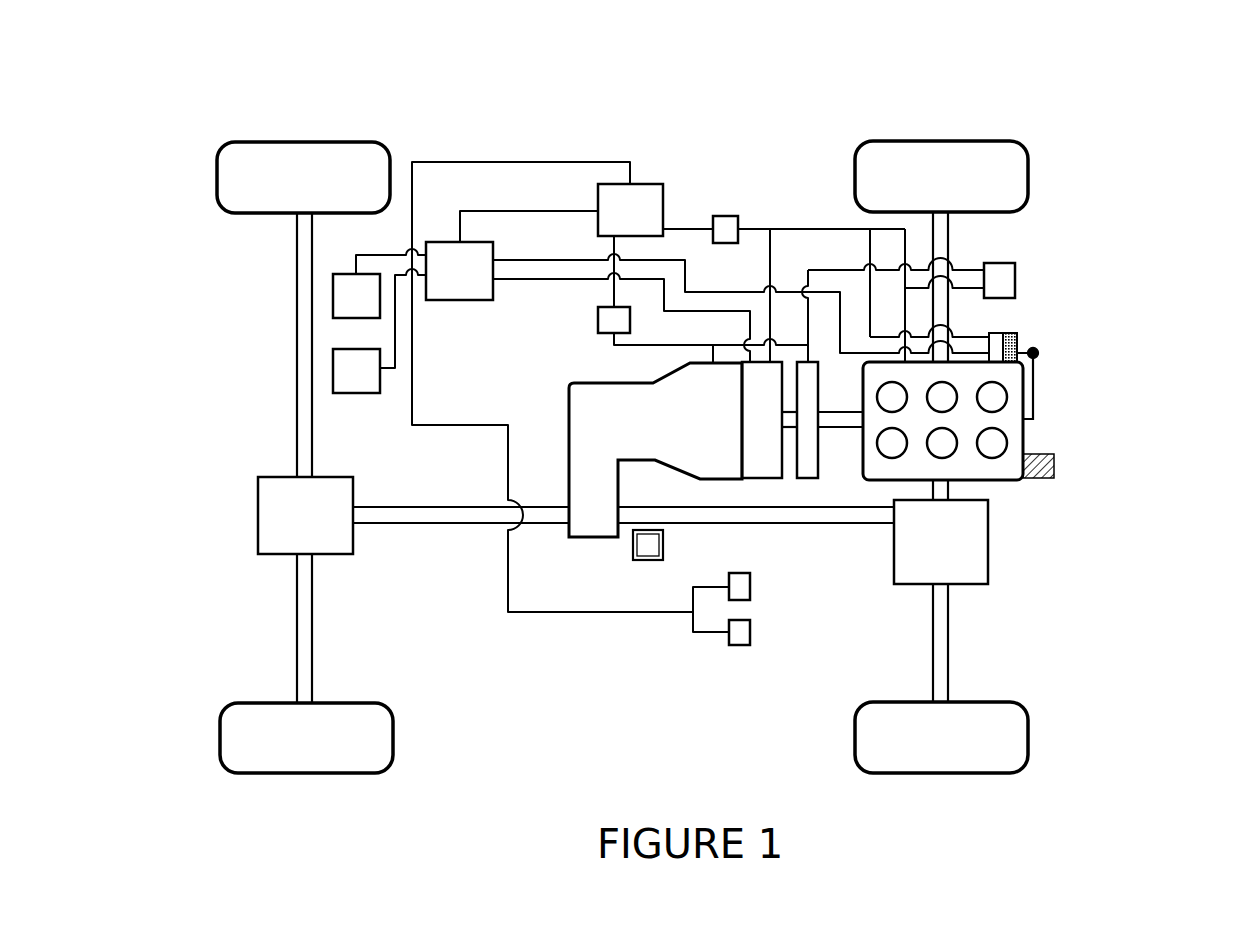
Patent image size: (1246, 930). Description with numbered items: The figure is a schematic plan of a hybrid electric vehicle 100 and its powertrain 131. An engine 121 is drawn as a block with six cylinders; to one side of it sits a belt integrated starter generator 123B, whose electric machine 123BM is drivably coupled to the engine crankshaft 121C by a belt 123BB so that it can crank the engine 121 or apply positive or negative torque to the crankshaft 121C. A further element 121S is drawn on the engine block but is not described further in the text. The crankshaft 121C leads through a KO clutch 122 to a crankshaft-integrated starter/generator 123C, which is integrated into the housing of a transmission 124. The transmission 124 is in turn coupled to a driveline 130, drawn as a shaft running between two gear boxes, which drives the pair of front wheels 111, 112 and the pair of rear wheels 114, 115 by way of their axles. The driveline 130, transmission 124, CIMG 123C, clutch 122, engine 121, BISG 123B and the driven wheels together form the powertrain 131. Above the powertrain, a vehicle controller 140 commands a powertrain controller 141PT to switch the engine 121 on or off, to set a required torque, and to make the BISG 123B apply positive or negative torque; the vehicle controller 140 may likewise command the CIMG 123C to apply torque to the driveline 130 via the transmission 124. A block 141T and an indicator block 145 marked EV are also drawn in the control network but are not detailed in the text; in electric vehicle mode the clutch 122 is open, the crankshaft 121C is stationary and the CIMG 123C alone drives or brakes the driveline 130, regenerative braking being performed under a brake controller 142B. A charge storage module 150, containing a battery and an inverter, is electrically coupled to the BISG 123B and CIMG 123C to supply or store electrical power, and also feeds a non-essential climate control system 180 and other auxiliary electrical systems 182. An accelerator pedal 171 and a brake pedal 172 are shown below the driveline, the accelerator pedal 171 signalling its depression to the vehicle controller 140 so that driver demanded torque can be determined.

The hybrid electric vehicle 100 is at (1090, 101).
The front wheel 111 is at (1011, 176).
The front wheel 112 is at (1015, 758).
The rear wheel 114 is at (238, 150).
The rear wheel 115 is at (240, 750).
The engine 121 is at (1013, 384).
The crankshaft 121C is at (857, 420).
The starter 121S is at (1054, 469).
The clutch 122 is at (808, 473).
The belt integrated starter generator 123B is at (1019, 335).
The electric machine 123BM is at (1058, 322).
The belt 123BB is at (1035, 405).
The crankshaft-integrated starter/generator 123C is at (762, 472).
The transmission 124 is at (595, 530).
The driveline 130 is at (450, 547).
The powertrain 131 is at (820, 550).
The vehicle controller 140 is at (648, 182).
The powertrain controller 141PT is at (725, 212).
The temperature sensor 141T is at (597, 330).
The brake controller 142B is at (1015, 270).
The EV mode indicator 145 is at (642, 562).
The charge storage module 150 is at (460, 287).
The accelerator pedal 171 is at (737, 648).
The brake pedal 172 is at (735, 602).
The climate control system 180 is at (356, 296).
The auxiliary electrical systems 182 is at (356, 371).